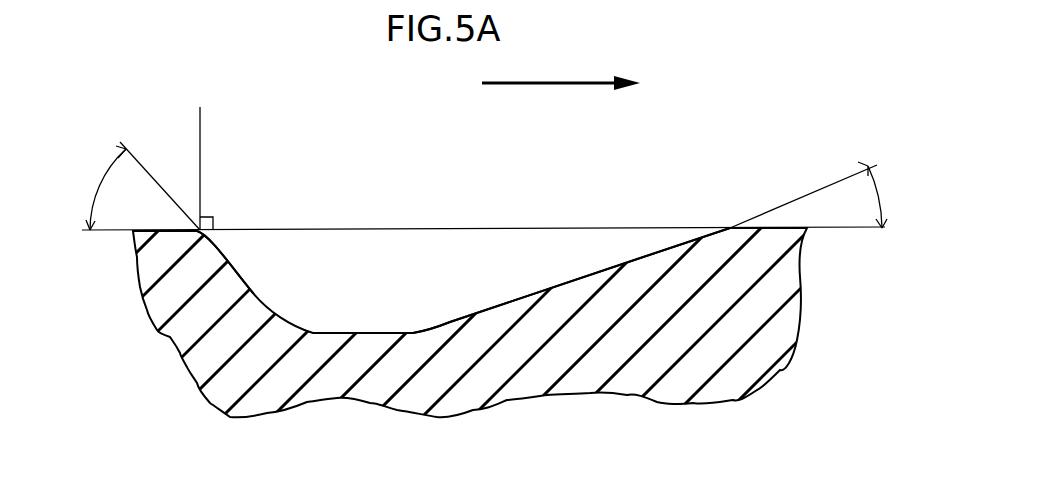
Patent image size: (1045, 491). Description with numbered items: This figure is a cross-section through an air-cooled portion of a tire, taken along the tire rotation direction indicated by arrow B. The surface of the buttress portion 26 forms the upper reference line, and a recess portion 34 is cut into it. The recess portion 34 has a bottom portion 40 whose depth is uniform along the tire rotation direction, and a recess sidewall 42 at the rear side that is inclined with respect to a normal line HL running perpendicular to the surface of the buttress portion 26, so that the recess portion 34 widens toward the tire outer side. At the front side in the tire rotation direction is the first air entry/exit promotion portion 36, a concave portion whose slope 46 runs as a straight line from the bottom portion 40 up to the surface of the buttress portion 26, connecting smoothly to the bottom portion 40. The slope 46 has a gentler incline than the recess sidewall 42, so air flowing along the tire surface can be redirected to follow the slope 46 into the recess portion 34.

The buttress portion 26 is at (152, 230).
The recess portion 34 is at (388, 330).
The first air entry/exit promotion portion 36 is at (625, 262).
The bottom portion 40 is at (408, 333).
The recess sidewall 42 is at (245, 283).
The slope 46 is at (658, 252).
The normal line HL is at (200, 165).
The tire rotation direction B is at (563, 83).